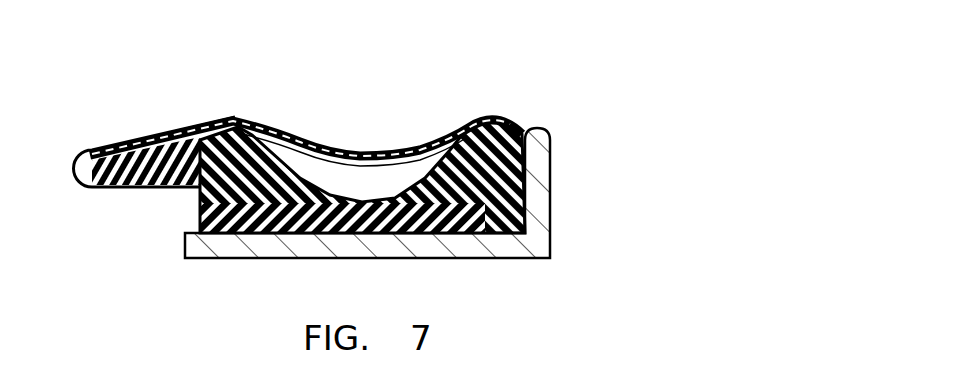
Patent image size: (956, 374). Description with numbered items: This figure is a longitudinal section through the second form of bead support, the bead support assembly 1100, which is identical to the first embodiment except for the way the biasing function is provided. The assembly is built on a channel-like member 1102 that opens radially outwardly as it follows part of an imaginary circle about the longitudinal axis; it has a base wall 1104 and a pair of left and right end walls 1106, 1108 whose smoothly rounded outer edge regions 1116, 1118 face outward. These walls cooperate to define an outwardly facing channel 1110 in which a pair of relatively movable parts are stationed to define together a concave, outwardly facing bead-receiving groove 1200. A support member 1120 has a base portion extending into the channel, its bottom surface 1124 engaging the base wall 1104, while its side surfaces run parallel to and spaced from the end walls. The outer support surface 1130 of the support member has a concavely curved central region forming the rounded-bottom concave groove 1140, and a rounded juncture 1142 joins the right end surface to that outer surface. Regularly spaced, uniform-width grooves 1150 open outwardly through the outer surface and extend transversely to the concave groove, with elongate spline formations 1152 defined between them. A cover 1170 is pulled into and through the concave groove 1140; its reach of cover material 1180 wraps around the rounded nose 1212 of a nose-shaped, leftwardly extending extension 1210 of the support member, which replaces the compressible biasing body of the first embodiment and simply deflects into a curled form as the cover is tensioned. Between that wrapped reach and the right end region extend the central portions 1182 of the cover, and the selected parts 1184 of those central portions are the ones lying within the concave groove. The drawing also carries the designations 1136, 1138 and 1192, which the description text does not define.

The bead support assembly 1100 is at (536, 71).
The channel-like member 1102 is at (196, 263).
The base wall 1104 is at (287, 249).
The left end wall 1106 is at (200, 218).
The right end wall 1108 is at (550, 184).
The outwardly facing channel 1110 is at (460, 233).
The outer edge region 1116 is at (198, 194).
The outer edge region 1118 is at (528, 131).
The support member 1120 is at (244, 258).
The bottom surface 1124 is at (390, 258).
The outer support surface 1130 is at (455, 124).
The corner region 1136 is at (197, 215).
The inner wall surface 1138 is at (522, 228).
The concave groove 1140 is at (342, 183).
The rounded juncture 1142 is at (507, 118).
The grooves 1150 is at (295, 136).
The spline formations 1152 is at (332, 142).
The cover 1170 is at (477, 116).
The reach of cover material 1180 is at (108, 188).
The central portions 1182 is at (236, 113).
The selected parts 1184 is at (380, 150).
The cavity 1192 is at (160, 140).
The bead-receiving groove 1200 is at (361, 122).
The nose-shaped extension 1210 is at (113, 148).
The rounded nose 1212 is at (78, 180).